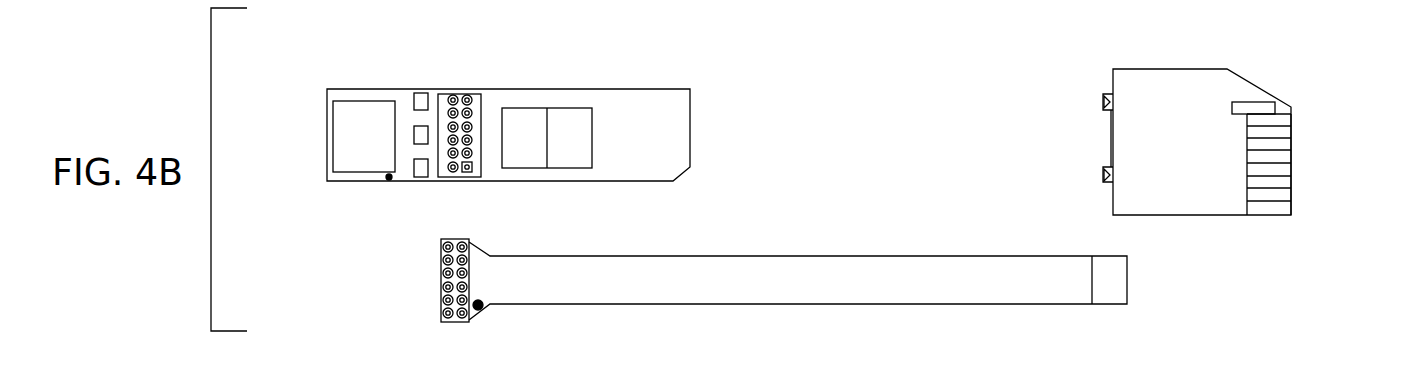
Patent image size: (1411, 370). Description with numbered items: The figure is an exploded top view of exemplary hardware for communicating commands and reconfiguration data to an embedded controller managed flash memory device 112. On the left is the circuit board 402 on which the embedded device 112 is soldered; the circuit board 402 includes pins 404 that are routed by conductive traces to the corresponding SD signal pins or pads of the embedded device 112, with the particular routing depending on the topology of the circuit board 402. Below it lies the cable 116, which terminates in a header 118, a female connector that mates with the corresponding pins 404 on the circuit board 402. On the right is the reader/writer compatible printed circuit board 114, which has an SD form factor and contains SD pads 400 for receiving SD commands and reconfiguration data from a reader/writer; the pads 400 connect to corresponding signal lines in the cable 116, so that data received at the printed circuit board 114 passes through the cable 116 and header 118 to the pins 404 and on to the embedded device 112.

The embedded device 112 is at (373, 120).
The pins 404 is at (467, 98).
The circuit board 402 is at (563, 88).
The reader/writer compatible printed circuit board 114 is at (1186, 68).
The SD pads 400 is at (1283, 120).
The header 118 is at (468, 252).
The cable 116 is at (658, 256).